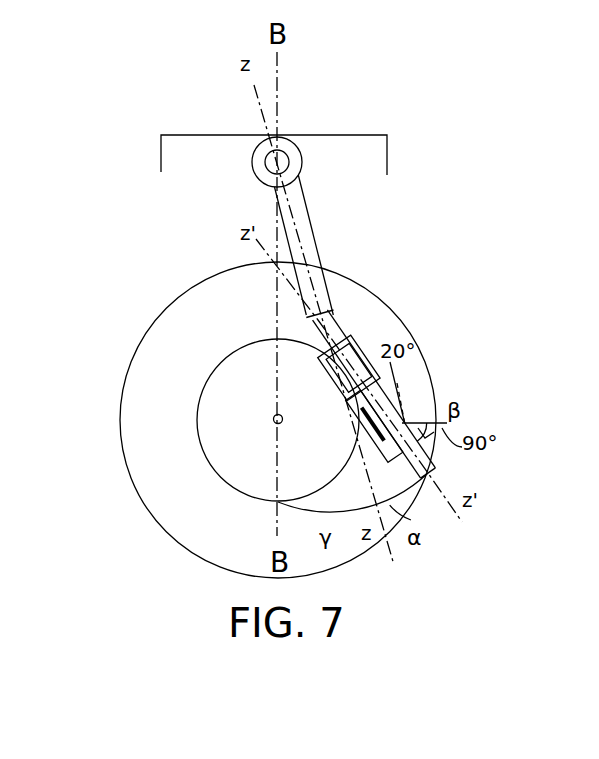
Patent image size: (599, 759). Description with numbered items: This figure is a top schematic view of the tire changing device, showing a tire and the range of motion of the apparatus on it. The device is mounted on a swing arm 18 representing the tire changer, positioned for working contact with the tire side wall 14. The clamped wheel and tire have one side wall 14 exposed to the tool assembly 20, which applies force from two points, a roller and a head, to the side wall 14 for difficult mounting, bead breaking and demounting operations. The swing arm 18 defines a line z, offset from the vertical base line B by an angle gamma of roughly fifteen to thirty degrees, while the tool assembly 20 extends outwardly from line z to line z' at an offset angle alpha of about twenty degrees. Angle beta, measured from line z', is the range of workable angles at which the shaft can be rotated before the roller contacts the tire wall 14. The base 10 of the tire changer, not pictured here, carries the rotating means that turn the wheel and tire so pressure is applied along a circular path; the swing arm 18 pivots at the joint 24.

The base 10 is at (157, 148).
The tire side wall 14 is at (155, 462).
The swing arm 18 is at (315, 240).
The tool assembly 20 is at (338, 320).
The pivot 24 is at (302, 162).